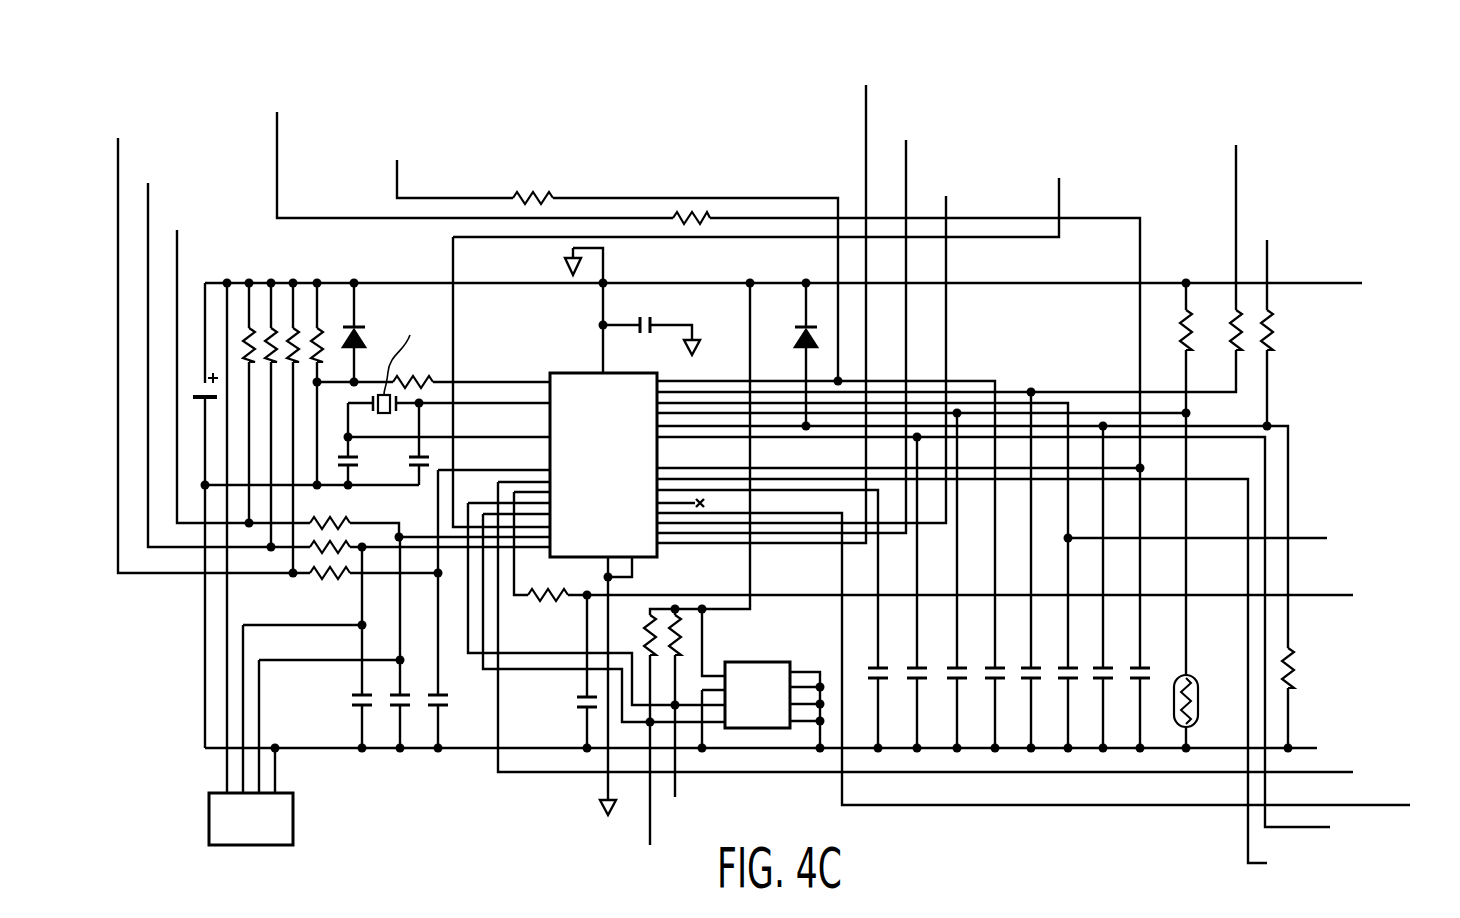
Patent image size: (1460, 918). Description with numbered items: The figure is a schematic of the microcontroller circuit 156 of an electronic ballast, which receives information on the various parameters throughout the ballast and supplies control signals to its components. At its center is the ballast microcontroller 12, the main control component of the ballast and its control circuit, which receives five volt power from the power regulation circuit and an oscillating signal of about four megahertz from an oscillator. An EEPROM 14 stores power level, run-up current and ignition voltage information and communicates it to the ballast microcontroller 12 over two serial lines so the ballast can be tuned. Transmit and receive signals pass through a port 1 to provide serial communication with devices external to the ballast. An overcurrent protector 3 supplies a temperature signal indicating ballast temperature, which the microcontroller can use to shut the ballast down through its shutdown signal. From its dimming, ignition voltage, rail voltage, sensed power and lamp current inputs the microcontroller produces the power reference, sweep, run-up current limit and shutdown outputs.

The microcontroller circuit 156 is at (690, 160).
The ballast microcontroller U12 12 is at (623, 478).
The EEPROM U14 14 is at (777, 711).
The port J1 1 is at (263, 834).
The overcurrent protector RT3 3 is at (1204, 685).